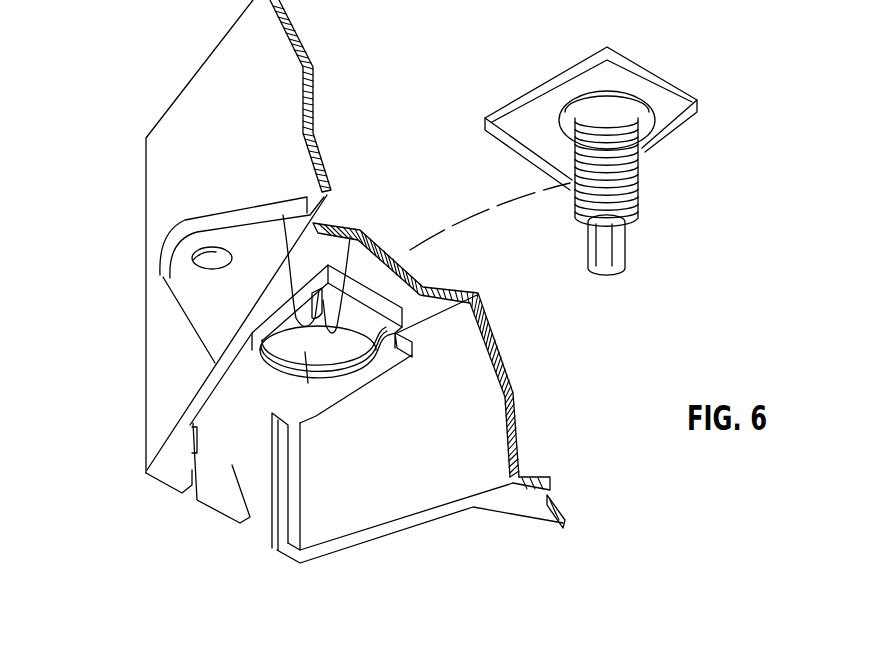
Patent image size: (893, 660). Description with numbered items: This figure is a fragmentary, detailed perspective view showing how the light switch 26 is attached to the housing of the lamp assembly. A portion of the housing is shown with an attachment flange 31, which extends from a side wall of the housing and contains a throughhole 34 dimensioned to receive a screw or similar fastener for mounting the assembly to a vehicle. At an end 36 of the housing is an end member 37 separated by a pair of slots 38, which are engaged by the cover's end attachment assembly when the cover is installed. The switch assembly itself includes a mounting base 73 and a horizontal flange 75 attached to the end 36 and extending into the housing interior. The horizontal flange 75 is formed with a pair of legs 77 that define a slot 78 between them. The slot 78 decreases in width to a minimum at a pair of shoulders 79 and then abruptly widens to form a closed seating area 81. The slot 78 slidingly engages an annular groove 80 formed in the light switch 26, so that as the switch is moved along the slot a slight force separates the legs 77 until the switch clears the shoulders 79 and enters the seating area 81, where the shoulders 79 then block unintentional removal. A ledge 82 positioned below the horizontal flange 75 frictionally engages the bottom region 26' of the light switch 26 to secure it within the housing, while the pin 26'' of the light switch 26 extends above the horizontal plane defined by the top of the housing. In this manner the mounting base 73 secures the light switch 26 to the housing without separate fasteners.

The light switch 26 is at (640, 174).
The bottom region of light switch 26' is at (581, 111).
The pin of light switch 26'' is at (641, 265).
The annular groove 80 is at (642, 100).
The attachment flange 31 is at (200, 303).
The throughhole 34 is at (168, 268).
The end of housing 36 is at (143, 438).
The mounting base 73 is at (230, 385).
The end member 37 is at (242, 492).
The slots 38 is at (205, 475).
The horizontal flange 75 is at (333, 385).
The legs 77 is at (283, 216).
The shoulders 79 is at (332, 320).
The seating area 81 is at (307, 360).
The ledge 82 is at (372, 290).
The slot 78 is at (477, 300).